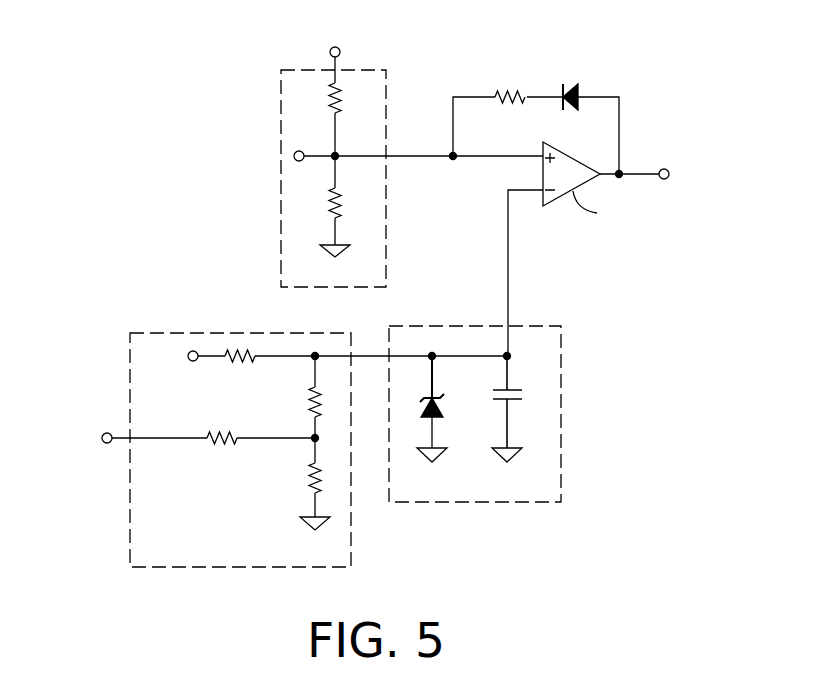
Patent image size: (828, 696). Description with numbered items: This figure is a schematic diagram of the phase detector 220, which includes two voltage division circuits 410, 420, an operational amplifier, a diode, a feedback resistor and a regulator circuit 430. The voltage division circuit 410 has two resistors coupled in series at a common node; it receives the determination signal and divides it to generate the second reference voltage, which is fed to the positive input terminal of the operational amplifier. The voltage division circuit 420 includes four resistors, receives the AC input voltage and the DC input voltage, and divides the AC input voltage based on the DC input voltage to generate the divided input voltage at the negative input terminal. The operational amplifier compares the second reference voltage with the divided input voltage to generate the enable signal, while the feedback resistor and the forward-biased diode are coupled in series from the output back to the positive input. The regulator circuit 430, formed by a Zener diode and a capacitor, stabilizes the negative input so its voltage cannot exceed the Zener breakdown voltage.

The phase detector 220 is at (717, 596).
The voltage division circuit 410 is at (382, 66).
The voltage division circuit 420 is at (130, 376).
The regulator circuit 430 is at (561, 410).